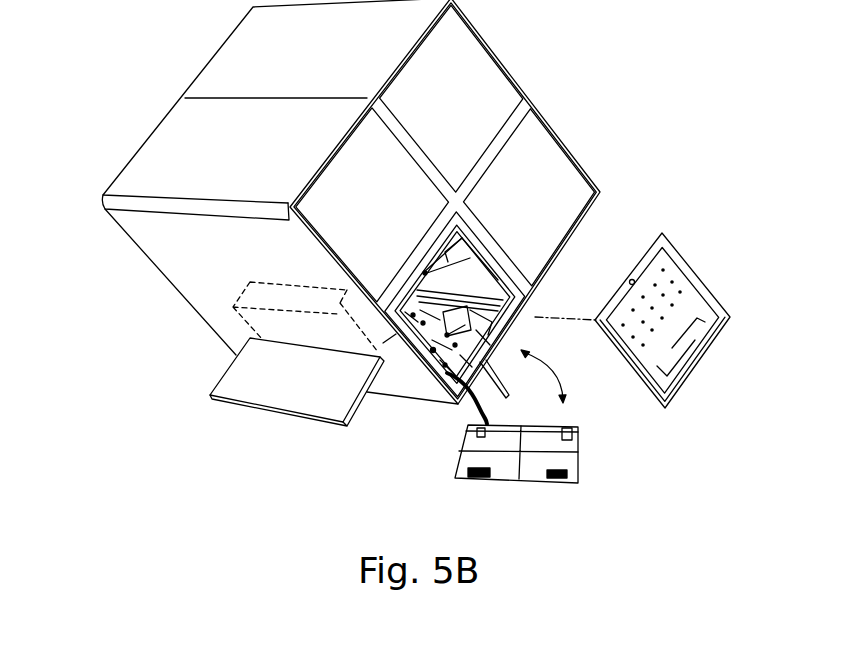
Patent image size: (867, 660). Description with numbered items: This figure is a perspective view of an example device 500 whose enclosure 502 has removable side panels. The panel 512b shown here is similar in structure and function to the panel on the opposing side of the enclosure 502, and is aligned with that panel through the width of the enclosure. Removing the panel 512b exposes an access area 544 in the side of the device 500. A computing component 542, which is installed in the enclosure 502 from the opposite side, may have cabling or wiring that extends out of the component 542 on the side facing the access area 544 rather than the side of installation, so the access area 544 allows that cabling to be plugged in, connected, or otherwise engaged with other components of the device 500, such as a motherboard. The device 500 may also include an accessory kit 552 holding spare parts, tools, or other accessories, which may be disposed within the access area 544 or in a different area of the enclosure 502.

The example device 500 is at (137, 123).
The enclosure 502 is at (113, 245).
The computing component 542 is at (287, 318).
The access area 544 is at (465, 286).
The accessory kit 552 is at (687, 313).
The panel 512b is at (563, 460).